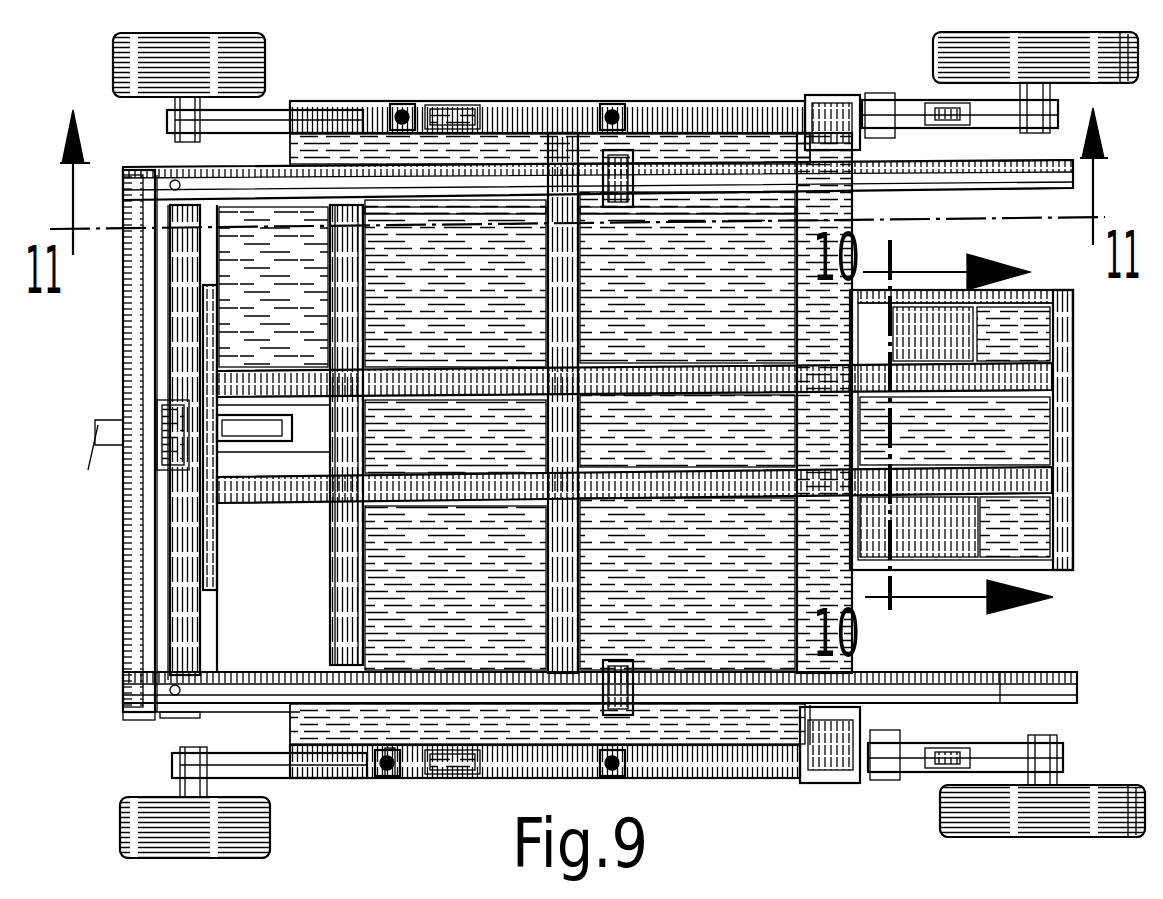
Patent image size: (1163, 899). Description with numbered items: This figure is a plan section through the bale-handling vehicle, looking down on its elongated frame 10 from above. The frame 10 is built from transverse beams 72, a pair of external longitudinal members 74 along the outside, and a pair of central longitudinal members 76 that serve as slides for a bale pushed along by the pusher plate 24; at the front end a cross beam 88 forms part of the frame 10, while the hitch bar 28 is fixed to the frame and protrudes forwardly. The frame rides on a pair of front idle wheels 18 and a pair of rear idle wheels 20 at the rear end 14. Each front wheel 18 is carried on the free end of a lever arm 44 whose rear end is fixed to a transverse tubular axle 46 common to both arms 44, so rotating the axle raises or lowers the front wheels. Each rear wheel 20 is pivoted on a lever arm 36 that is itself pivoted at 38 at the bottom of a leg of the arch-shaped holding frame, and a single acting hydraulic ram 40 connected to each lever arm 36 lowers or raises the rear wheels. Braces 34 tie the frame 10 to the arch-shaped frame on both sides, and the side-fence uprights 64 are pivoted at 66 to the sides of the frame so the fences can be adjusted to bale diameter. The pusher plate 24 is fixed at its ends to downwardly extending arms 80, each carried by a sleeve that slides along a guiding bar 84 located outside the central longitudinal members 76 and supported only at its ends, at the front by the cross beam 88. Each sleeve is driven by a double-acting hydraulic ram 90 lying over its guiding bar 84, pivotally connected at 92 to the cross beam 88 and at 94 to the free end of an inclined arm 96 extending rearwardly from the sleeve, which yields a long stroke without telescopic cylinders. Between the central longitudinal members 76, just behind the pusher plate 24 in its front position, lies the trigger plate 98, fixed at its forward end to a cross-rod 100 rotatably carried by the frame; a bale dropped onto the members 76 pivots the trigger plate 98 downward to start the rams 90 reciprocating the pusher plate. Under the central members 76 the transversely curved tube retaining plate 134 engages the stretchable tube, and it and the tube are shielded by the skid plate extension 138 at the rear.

The frame 10 is at (120, 570).
The rear end 14 is at (800, 772).
The front idle wheels 18 is at (124, 816).
The rear idle wheels 20 is at (1090, 787).
The pusher plate 24 is at (216, 332).
The hitch bar 28 is at (95, 433).
The braces 34 is at (480, 107).
The lever arm 36 is at (1000, 750).
The pivot 38 is at (880, 790).
The single acting hydraulic ram 40 is at (932, 758).
The lever arm 44 is at (275, 770).
The transverse tubular axle 46 is at (335, 640).
The uprights 64 is at (385, 776).
The pivot 66 is at (402, 778).
The transverse beams 72 is at (180, 529).
The external longitudinal members 74 is at (556, 118).
The central longitudinal members 76 is at (640, 490).
The downwardly extending arms 80 is at (245, 190).
The guiding bar 84 is at (1075, 188).
The cross beam 88 is at (123, 395).
The double-acting hydraulic ram 90 is at (185, 716).
The pivotal connection 92 is at (140, 722).
The pivotal connection 94 is at (640, 690).
The inclined arm 96 is at (528, 720).
The trigger plate 98 is at (272, 418).
The cross-rod 100 is at (155, 479).
The tube retaining plate 134 is at (1050, 425).
The skid plate extension 138 is at (1075, 572).